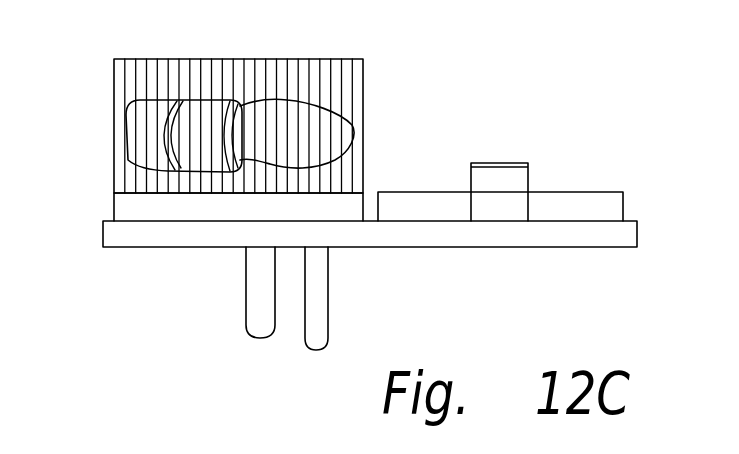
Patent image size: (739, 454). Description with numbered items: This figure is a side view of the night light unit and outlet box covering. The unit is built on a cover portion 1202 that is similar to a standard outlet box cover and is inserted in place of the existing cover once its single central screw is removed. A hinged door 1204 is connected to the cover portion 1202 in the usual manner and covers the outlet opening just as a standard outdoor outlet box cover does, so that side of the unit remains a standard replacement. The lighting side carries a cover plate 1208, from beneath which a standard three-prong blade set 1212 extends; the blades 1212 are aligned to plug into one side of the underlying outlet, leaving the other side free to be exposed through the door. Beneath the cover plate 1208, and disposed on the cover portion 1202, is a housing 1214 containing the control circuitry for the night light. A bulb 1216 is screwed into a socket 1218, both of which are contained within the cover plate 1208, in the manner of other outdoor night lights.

The cover portion 1202 is at (112, 235).
The hinged door 1204 is at (565, 190).
The cover plate 1208 is at (140, 59).
The three-prong blade set 1212 is at (245, 296).
The housing 1214 is at (127, 203).
The bulb 1216 is at (323, 124).
The socket 1218 is at (203, 116).